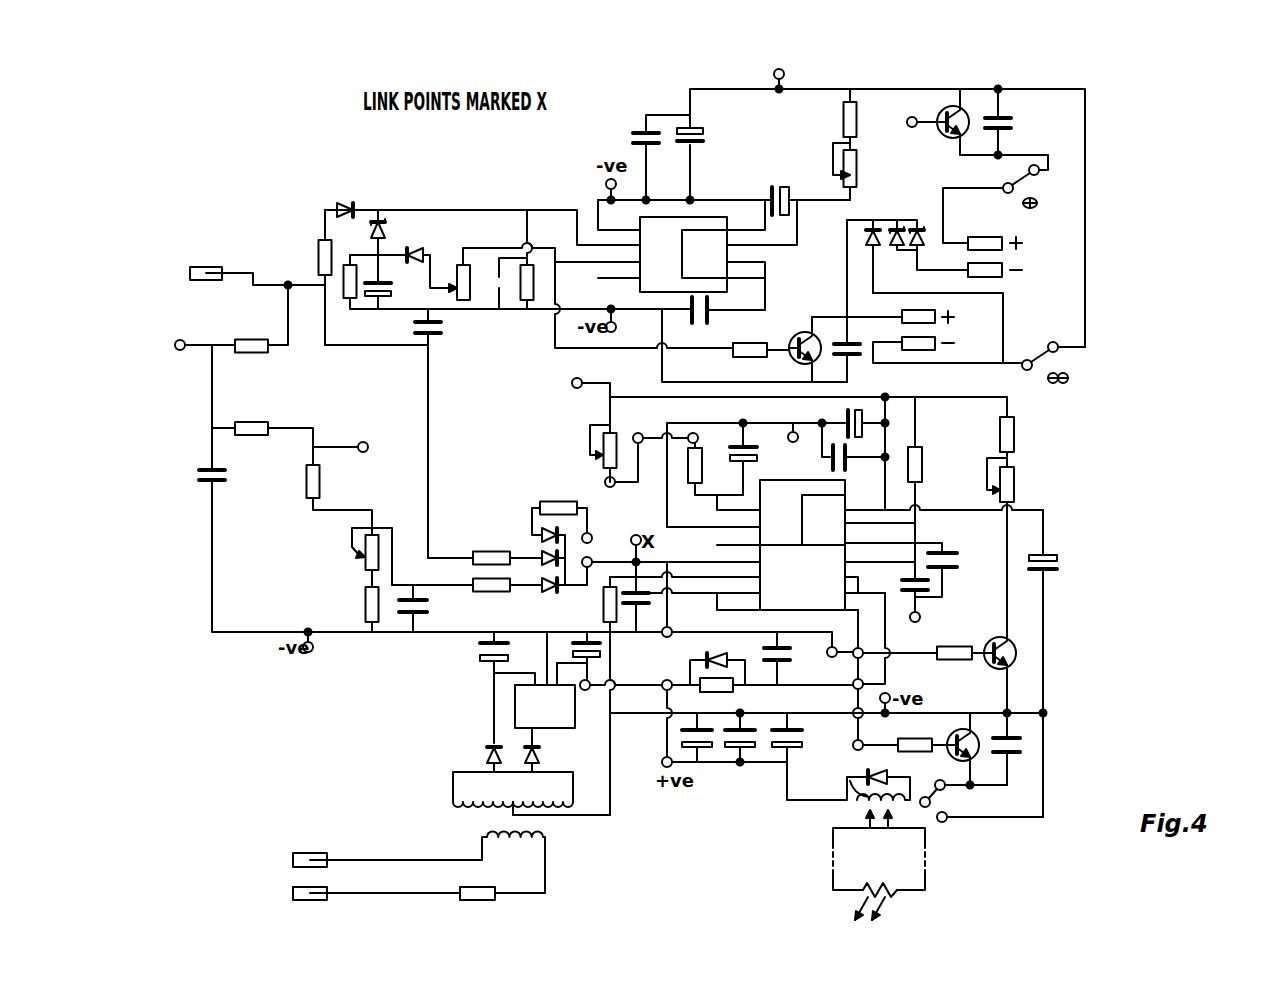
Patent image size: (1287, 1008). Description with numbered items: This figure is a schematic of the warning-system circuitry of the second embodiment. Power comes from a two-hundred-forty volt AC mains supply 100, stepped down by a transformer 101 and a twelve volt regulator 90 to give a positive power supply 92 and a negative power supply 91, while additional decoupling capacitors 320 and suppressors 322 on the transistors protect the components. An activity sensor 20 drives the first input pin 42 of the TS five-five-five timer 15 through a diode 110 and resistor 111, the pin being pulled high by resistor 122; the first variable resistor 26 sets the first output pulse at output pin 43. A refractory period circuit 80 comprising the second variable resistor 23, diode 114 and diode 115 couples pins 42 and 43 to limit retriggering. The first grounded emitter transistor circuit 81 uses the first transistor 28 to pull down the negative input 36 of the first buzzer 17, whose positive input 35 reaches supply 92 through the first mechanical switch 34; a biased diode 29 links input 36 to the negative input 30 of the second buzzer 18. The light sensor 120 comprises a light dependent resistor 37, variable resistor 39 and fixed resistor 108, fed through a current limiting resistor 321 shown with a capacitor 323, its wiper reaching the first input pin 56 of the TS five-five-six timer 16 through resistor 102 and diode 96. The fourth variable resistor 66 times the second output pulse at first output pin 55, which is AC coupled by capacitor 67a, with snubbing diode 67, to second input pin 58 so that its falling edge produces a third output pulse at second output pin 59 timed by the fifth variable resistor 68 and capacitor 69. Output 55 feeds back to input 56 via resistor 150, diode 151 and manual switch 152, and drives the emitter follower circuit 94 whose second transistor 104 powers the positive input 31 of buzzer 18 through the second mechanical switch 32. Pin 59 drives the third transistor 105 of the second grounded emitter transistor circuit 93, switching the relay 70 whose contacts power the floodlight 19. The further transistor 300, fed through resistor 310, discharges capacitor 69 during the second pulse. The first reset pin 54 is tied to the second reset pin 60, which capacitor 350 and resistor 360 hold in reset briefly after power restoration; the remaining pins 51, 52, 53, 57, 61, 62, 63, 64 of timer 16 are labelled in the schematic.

The TS 555 integrated circuit 15 is at (709, 265).
The TS 556 integrated circuit 16 is at (834, 545).
The first buzzer 17 is at (988, 343).
The second buzzer 18 is at (1062, 270).
The floodlight 19 is at (928, 883).
The activity sensor 20 is at (202, 264).
The second variable resistor 23 is at (460, 266).
The first variable resistor 26 is at (860, 170).
The first transistor 28 is at (790, 340).
The biased diode 29 is at (898, 227).
The negative input of second buzzer 30 is at (991, 277).
The positive input of second buzzer 31 is at (984, 238).
The second mechanical switch 32 is at (1038, 185).
The first mechanical switch 34 is at (1068, 365).
The positive input of first buzzer 35 is at (922, 350).
The negative input of first buzzer 36 is at (912, 310).
The light dependent resistor 37 is at (320, 480).
The third variable resistor 39 is at (352, 548).
The first input pin 42 is at (348, 289).
The output pin 43 is at (382, 299).
The pin 51 is at (727, 503).
The pin 52 is at (713, 521).
The pin 53 is at (748, 539).
The first reset pin 54 is at (676, 556).
The first output pin 55 is at (685, 571).
The first input pin 56 is at (700, 587).
The pin 57 is at (727, 602).
The second input pin 58 is at (862, 604).
The second output pin 59 is at (865, 587).
The second reset pin 60 is at (862, 578).
The pin 61 is at (880, 556).
The pin 62 is at (893, 541).
The pin 63 is at (880, 517).
The pin 64 is at (944, 504).
The fourth variable resistor 66 is at (589, 441).
The snubbing diode 67 is at (705, 658).
The capacitor 67a is at (771, 632).
The fifth variable resistor 68 is at (1016, 461).
The capacitor 69 is at (1060, 566).
The relay 70 is at (845, 778).
The refractory period circuit 80 is at (419, 300).
The first grounded emitter transistor circuit 81 is at (803, 323).
The 12 V regulator 90 is at (570, 730).
The negative power supply 91 is at (789, 432).
The positive power supply 92 is at (181, 352).
The second grounded emitter transistor circuit 93 is at (950, 802).
The emitter follower circuit 94 is at (1052, 135).
The diode 96 is at (548, 590).
The AC mains supply 100 is at (290, 877).
The transformer 101 is at (545, 826).
The resistor 102 is at (490, 593).
The second transistor 104 is at (952, 111).
The third transistor 105 is at (977, 760).
The fixed resistor 108 is at (366, 606).
The diode 110 is at (340, 205).
The resistor 111 is at (318, 250).
The diode 114 is at (418, 246).
The diode 115 is at (380, 222).
The light sensor 120 is at (278, 580).
The resistor 122 is at (266, 353).
The resistor 150 is at (560, 501).
The diode 151 is at (540, 538).
The manual switch 152 is at (590, 535).
The further transistor 300 is at (1018, 652).
The resistor 310 is at (953, 662).
The decoupling capacitors 320 is at (638, 129).
The current limiting resistor 321 is at (254, 436).
The suppressors 322 is at (1003, 115).
The capacitor 323 is at (197, 474).
The capacitor 350 is at (948, 550).
The resistor 360 is at (924, 446).